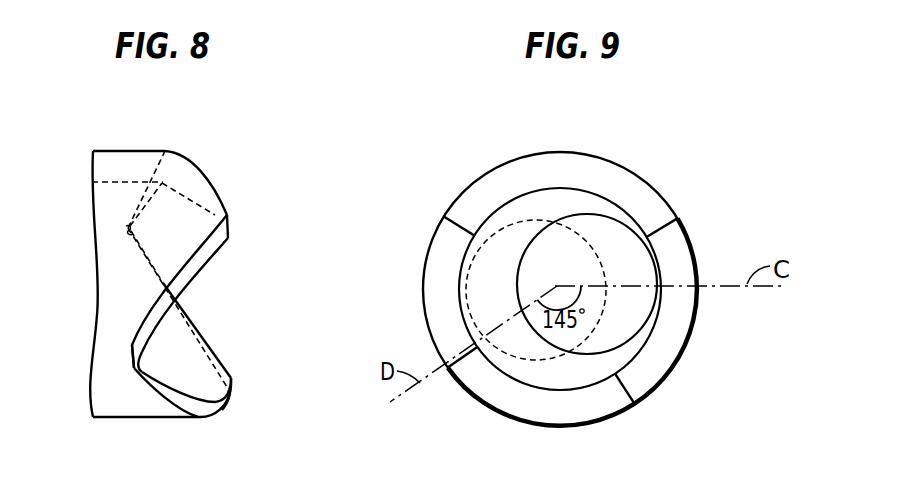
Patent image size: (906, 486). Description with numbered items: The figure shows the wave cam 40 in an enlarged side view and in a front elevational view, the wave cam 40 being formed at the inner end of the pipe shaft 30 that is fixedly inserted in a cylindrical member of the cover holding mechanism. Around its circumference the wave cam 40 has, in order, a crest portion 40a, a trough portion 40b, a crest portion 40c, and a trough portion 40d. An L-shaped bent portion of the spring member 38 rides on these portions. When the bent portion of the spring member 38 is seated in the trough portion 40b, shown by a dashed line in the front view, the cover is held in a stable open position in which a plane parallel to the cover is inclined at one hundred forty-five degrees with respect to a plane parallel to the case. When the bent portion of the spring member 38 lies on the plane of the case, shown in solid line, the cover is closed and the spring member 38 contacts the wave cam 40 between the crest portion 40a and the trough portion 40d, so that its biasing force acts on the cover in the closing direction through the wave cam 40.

In FIG. 8, the pipe shaft 30 is at (116, 149).
In FIG. 9, the pipe shaft 30 is at (538, 151).
In FIG. 9, the spring member 38 is at (513, 224).
In FIG. 8, the wave cam 40 is at (172, 201).
In FIG. 9, the wave cam 40 is at (623, 187).
In FIG. 8, the crest portion 40a is at (233, 387).
In FIG. 9, the crest portion 40a is at (625, 388).
In FIG. 8, the trough portion 40b is at (137, 356).
In FIG. 9, the trough portion 40b is at (466, 355).
In FIG. 8, the crest portion 40c is at (229, 227).
In FIG. 9, the crest portion 40c is at (462, 224).
In FIG. 8, the trough portion 40d is at (126, 231).
In FIG. 9, the trough portion 40d is at (660, 226).